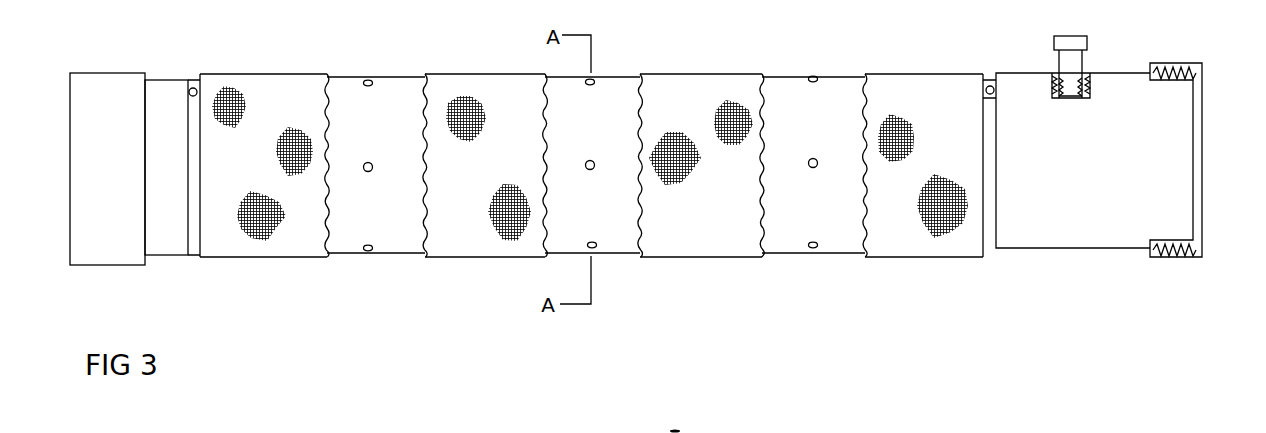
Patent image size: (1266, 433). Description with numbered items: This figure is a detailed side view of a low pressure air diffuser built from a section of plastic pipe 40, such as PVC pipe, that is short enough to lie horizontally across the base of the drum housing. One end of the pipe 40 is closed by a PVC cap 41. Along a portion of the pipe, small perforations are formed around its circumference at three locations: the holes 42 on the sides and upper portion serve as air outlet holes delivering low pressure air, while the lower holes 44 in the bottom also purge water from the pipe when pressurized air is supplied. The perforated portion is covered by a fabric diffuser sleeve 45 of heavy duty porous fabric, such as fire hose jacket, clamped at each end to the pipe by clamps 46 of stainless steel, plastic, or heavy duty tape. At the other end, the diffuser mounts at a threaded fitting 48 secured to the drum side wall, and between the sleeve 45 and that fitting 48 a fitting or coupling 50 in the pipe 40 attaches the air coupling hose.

The plastic pipe 40 is at (400, 235).
The PVC cap 41 is at (118, 73).
The air outlet holes 42 is at (370, 163).
The lower holes 44 is at (368, 252).
The fabric diffuser sleeve 45 is at (473, 245).
The clamps 46 is at (193, 247).
The threaded fitting 48 is at (1190, 63).
The fitting or coupling 50 is at (1088, 44).